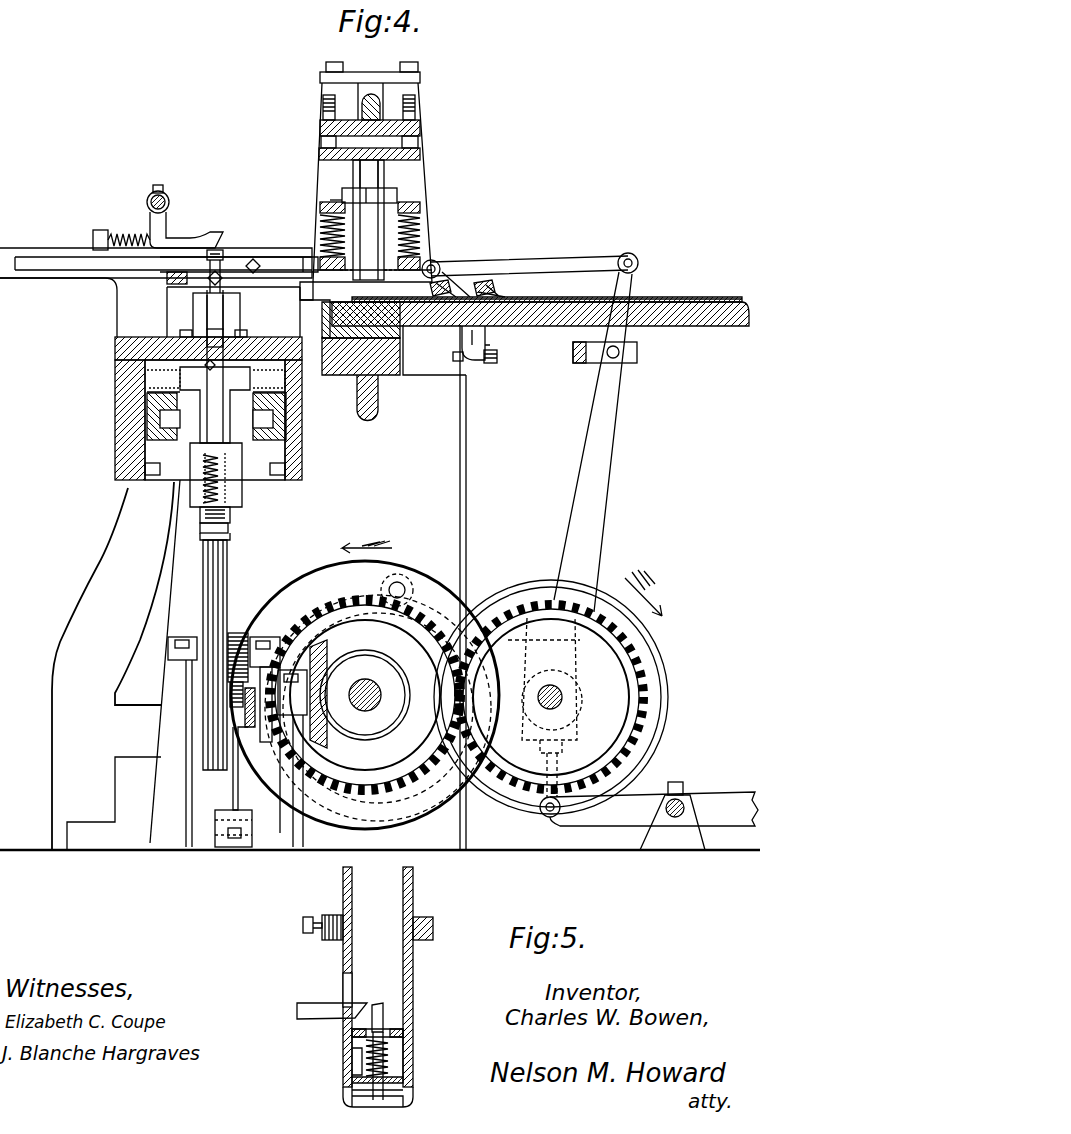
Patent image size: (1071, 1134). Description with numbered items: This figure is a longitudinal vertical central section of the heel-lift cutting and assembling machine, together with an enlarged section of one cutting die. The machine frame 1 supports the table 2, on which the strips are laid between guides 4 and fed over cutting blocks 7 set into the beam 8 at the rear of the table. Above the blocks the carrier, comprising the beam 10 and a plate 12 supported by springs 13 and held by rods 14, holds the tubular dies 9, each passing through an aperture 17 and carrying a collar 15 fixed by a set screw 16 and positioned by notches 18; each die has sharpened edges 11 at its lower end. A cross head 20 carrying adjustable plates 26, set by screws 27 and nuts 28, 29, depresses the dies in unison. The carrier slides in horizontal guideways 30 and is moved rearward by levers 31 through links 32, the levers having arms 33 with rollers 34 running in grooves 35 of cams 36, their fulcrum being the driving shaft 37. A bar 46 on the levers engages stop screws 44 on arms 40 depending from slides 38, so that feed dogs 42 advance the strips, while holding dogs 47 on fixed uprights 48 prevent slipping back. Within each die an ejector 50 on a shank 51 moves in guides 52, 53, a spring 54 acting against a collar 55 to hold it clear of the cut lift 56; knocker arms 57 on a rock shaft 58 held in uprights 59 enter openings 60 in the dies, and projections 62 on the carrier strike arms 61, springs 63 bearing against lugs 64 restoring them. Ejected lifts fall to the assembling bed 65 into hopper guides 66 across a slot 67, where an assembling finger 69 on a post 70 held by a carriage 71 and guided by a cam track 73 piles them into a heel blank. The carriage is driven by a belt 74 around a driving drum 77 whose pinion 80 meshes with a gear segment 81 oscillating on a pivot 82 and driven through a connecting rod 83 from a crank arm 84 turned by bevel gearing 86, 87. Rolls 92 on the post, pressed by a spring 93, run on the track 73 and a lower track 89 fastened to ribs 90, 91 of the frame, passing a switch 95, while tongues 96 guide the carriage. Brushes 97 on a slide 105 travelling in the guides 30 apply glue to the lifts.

In FIG. 4, the frame 1 is at (455, 450).
In FIG. 4, the table 2 is at (722, 326).
In FIG. 4, the guides 4 is at (674, 296).
In FIG. 4, the cutting blocks 7 is at (338, 300).
In FIG. 4, the beam 8 is at (318, 312).
In FIG. 4, the tubular die members 9 is at (382, 232).
In FIG. 5, the tubular die members 9 is at (414, 964).
In FIG. 4, the cutter holder or carrier 10 is at (300, 258).
In FIG. 5, the sharpened edges 11 is at (408, 1102).
In FIG. 4, the plate 12 is at (336, 200).
In FIG. 4, the springs 13 is at (322, 218).
In FIG. 4, the bolts or rods 14 is at (420, 226).
In FIG. 4, the collar 15 is at (395, 192).
In FIG. 5, the collar 15 is at (424, 918).
In FIG. 5, the set screw 16 is at (309, 917).
In FIG. 4, the aperture 17 is at (415, 208).
In FIG. 4, the notches 18 is at (360, 185).
In FIG. 4, the cross head 20 is at (432, 124).
In FIG. 4, the adjustable plates 26 is at (390, 180).
In FIG. 4, the screws 27 is at (408, 92).
In FIG. 4, the nut 28 is at (412, 110).
In FIG. 4, the nut 29 is at (418, 152).
In FIG. 4, the horizontal guideways 30 is at (40, 262).
In FIG. 4, the levers 31 is at (602, 458).
In FIG. 4, the links 32 is at (565, 262).
In FIG. 4, the arms 33 is at (462, 610).
In FIG. 4, the rollers 34 is at (400, 585).
In FIG. 4, the grooves 35 is at (326, 562).
In FIG. 4, the cams 36 is at (298, 584).
In FIG. 4, the driving shaft 37 is at (562, 698).
In FIG. 4, the slide 38 is at (444, 288).
In FIG. 4, the arm 40 is at (462, 340).
In FIG. 4, the feed dog 42 is at (445, 284).
In FIG. 4, the adjustable stop screw 44 is at (496, 355).
In FIG. 4, the bar 46 is at (572, 356).
In FIG. 4, the holding dogs 47 is at (484, 288).
In FIG. 4, the fixed uprights 48 is at (500, 297).
In FIG. 5, the ejector 50 is at (358, 1078).
In FIG. 5, the shank 51 is at (384, 1090).
In FIG. 5, the lower guide 52 is at (345, 1060).
In FIG. 5, the guide 53 is at (352, 1040).
In FIG. 5, the spring 54 is at (395, 1048).
In FIG. 5, the collar 55 is at (395, 1032).
In FIG. 5, the lift 56 is at (352, 1100).
In FIG. 4, the knocker arms 57 is at (184, 234).
In FIG. 5, the knocker arms 57 is at (312, 1004).
In FIG. 4, the rock shaft 58 is at (162, 200).
In FIG. 4, the uprights 59 is at (146, 200).
In FIG. 5, the opening 60 is at (340, 975).
In FIG. 4, the arms 61 is at (166, 274).
In FIG. 4, the projections 62 is at (318, 234).
In FIG. 4, the springs 63 is at (125, 233).
In FIG. 4, the lugs 64 is at (98, 230).
In FIG. 4, the assembling bed 65 is at (156, 337).
In FIG. 4, the guides 66 is at (236, 322).
In FIG. 4, the longitudinal slot 67 is at (190, 337).
In FIG. 4, the assembling finger 69 is at (220, 338).
In FIG. 4, the post 70 is at (215, 366).
In FIG. 4, the carriage 71 is at (178, 496).
In FIG. 4, the cam track 73 is at (130, 372).
In FIG. 4, the belt or cable 74 is at (206, 566).
In FIG. 4, the driving drum 77 is at (202, 604).
In FIG. 4, the gear pinion 80 is at (238, 630).
In FIG. 4, the gear segment 81 is at (215, 700).
In FIG. 4, the pivot 82 is at (216, 832).
In FIG. 4, the connecting rod 83 is at (250, 712).
In FIG. 4, the crank arm 84 is at (268, 732).
In FIG. 4, the bevel gear 86 is at (320, 660).
In FIG. 4, the bevel gear 87 is at (370, 656).
In FIG. 4, the lower track 89 is at (200, 442).
In FIG. 4, the rib or beam 90 is at (115, 400).
In FIG. 4, the rib or beam 91 is at (305, 402).
In FIG. 4, the rolls 92 is at (115, 346).
In FIG. 4, the spring 93 is at (230, 520).
In FIG. 4, the switch 95 is at (150, 418).
In FIG. 4, the tongues or ribs 96 is at (140, 472).
In FIG. 4, the brushes 97 is at (216, 250).
In FIG. 4, the frame or slide 105 is at (170, 282).